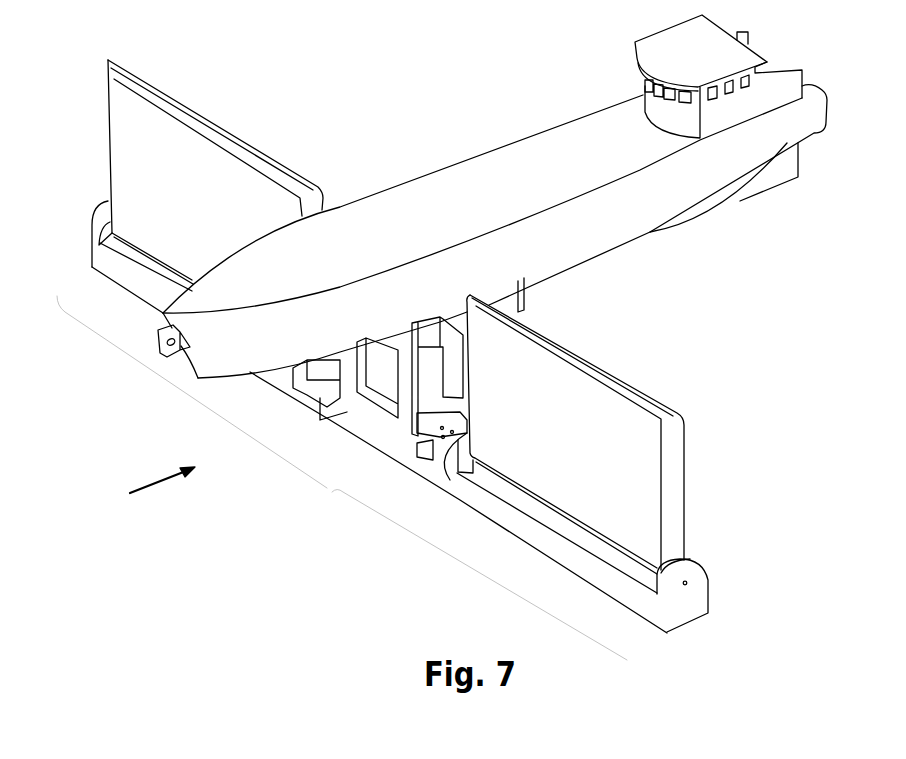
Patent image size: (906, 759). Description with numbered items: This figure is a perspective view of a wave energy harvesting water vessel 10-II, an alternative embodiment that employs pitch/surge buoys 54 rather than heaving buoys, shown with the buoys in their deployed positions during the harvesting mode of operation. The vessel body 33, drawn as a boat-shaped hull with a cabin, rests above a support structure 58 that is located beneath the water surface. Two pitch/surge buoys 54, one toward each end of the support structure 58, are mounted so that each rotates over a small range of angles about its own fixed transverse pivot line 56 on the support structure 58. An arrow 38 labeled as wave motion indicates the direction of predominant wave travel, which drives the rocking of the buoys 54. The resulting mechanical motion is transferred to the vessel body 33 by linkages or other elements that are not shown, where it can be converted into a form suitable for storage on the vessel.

The vessel 10-II is at (442, 337).
The vessel body 33 is at (586, 237).
The arrow 38 is at (163, 485).
The pitch/surge buoy 54 is at (280, 163).
The fixed transverse pivot line 56 is at (688, 584).
The support structure 58 is at (327, 492).